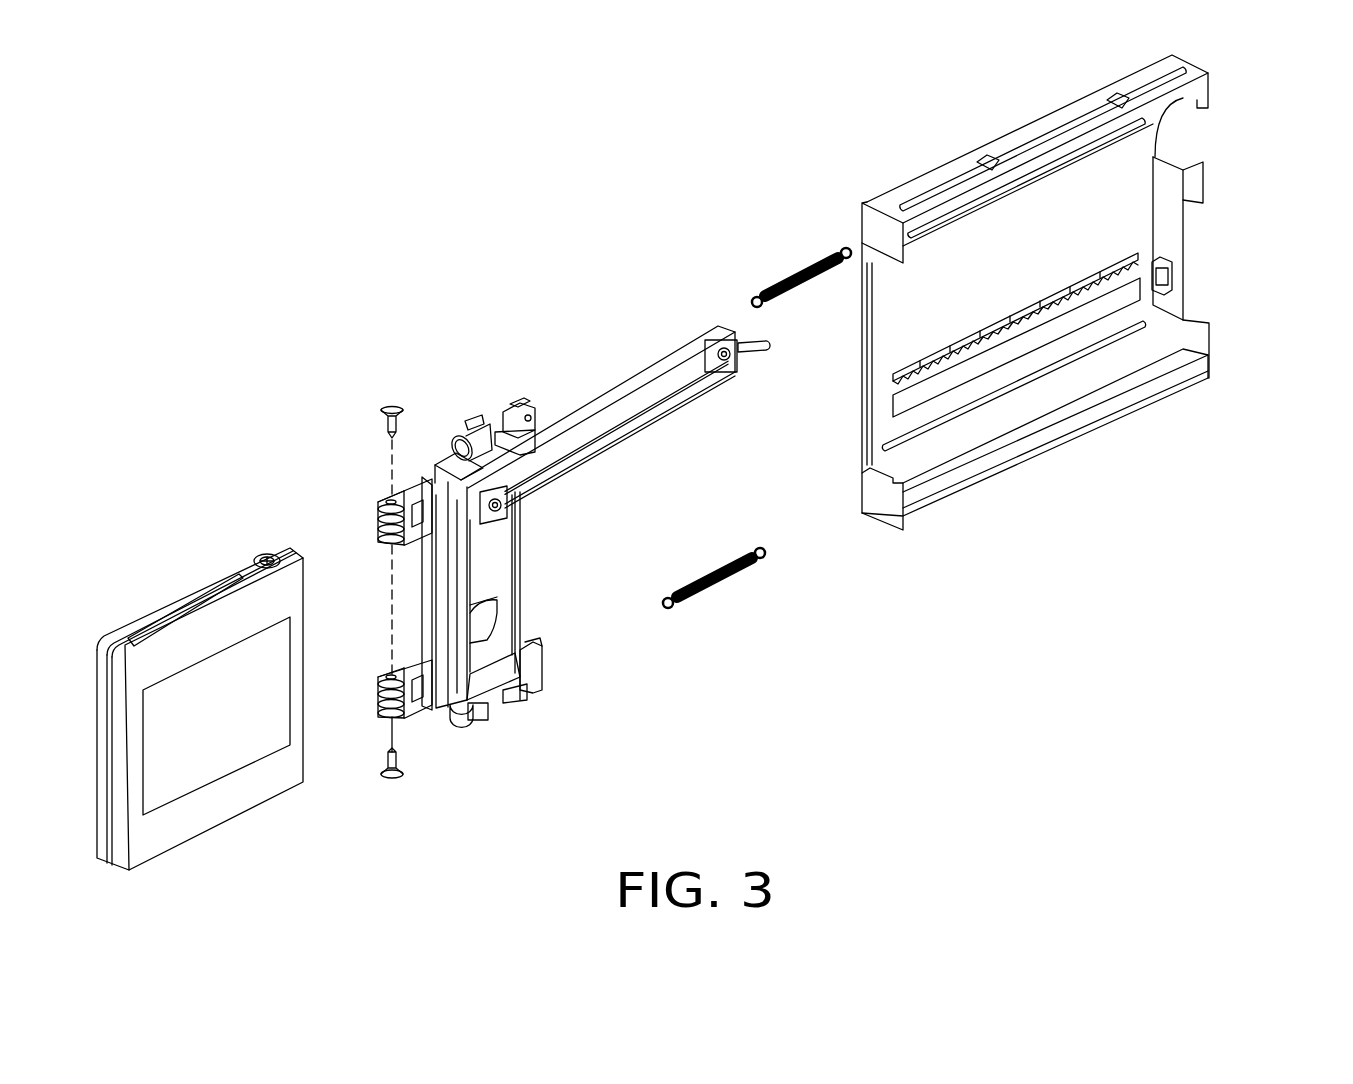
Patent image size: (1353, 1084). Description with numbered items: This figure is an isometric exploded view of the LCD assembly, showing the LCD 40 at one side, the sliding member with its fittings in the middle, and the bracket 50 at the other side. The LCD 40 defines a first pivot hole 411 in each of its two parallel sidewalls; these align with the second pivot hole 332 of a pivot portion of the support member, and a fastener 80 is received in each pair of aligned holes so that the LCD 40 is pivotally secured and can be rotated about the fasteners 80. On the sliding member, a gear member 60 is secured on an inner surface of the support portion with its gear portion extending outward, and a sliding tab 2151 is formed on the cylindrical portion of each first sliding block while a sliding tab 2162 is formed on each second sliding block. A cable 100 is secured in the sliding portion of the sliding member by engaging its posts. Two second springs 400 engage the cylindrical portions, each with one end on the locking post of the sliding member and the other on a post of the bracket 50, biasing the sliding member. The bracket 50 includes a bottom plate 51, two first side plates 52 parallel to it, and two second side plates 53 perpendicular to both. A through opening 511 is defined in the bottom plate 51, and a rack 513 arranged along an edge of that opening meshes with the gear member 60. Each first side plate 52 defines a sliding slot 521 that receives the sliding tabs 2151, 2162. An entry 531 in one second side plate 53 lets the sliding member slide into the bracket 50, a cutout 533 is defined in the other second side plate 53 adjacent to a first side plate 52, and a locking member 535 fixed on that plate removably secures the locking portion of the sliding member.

The LCD 40 is at (187, 668).
The first pivot hole 411 is at (267, 553).
The fastener 80 is at (386, 403).
The second pivot hole 332 is at (384, 498).
The gear member 60 is at (487, 620).
The sliding tab 2151 is at (468, 418).
The sliding tab 2162 is at (518, 392).
The cable 100 is at (642, 412).
The second spring 400 is at (725, 578).
The bracket 50 is at (1019, 317).
The first side plate 52 is at (1011, 159).
The sliding slot 521 is at (912, 203).
The cutout 533 is at (1180, 140).
The second side plate 53 is at (1223, 267).
The locking member 535 is at (1175, 285).
The bottom plate 51 is at (956, 416).
The through opening 511 is at (903, 398).
The rack 513 is at (950, 365).
The entry 531 is at (873, 447).